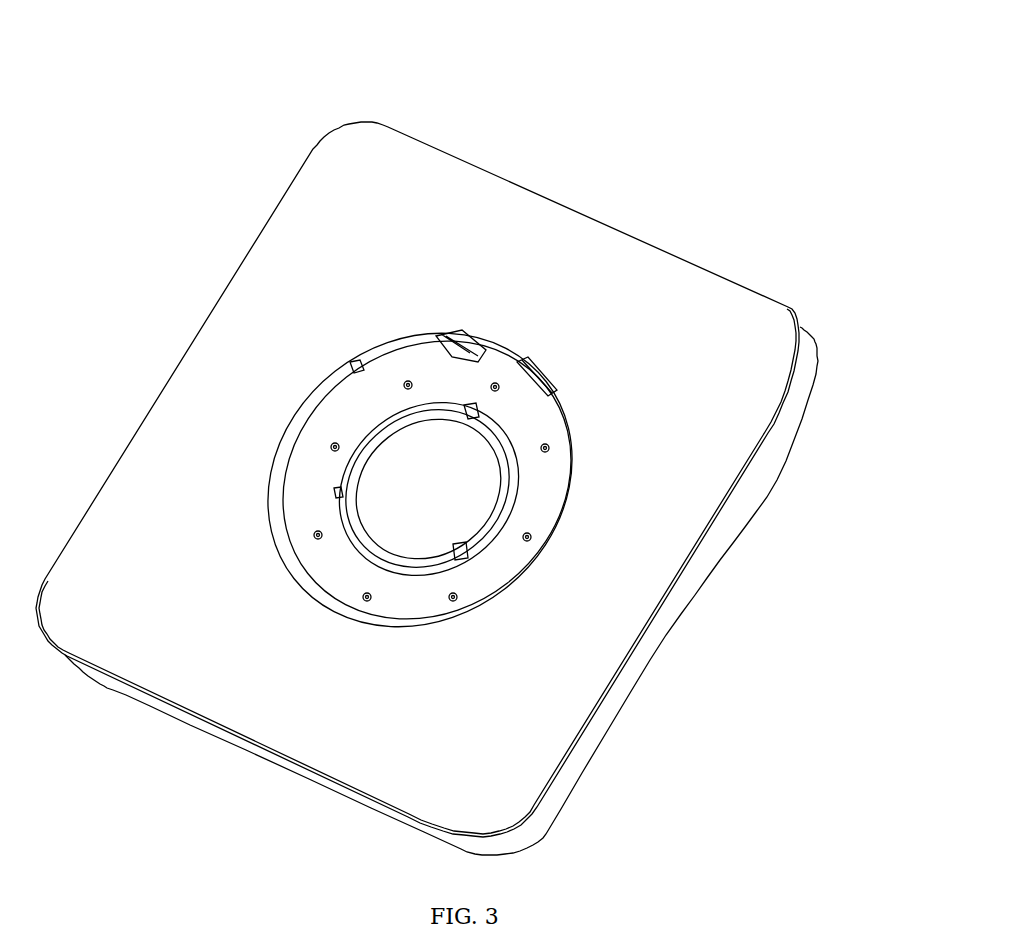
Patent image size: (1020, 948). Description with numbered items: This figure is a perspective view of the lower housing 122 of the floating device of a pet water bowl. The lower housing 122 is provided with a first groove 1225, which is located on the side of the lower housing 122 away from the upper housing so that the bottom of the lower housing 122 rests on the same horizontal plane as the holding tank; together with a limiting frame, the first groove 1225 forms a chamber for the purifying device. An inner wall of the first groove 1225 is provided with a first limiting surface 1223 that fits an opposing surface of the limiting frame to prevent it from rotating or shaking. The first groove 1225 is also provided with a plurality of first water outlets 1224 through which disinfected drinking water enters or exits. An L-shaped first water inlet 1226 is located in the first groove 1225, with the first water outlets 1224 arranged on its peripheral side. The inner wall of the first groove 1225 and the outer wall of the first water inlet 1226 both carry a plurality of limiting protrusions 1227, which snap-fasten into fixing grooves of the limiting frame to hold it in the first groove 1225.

The lower housing 122 is at (310, 43).
The first limiting surface 1223 is at (531, 378).
The first water outlets 1224 is at (549, 448).
The first groove 1225 is at (535, 487).
The first water inlet 1226 is at (450, 558).
The limiting protrusions 1227 is at (337, 493).